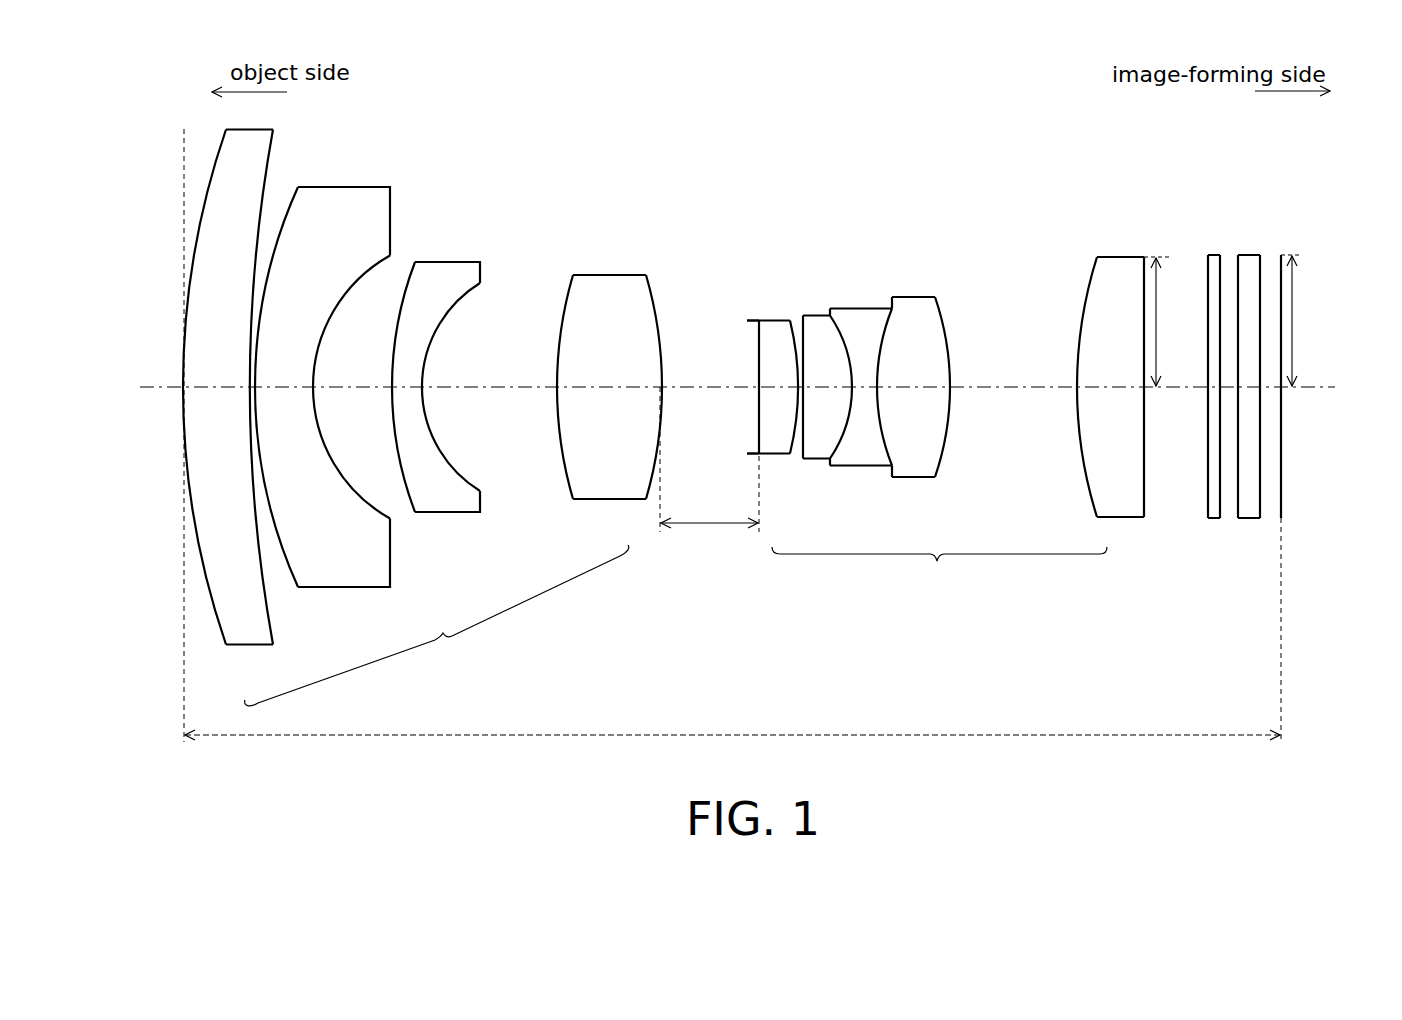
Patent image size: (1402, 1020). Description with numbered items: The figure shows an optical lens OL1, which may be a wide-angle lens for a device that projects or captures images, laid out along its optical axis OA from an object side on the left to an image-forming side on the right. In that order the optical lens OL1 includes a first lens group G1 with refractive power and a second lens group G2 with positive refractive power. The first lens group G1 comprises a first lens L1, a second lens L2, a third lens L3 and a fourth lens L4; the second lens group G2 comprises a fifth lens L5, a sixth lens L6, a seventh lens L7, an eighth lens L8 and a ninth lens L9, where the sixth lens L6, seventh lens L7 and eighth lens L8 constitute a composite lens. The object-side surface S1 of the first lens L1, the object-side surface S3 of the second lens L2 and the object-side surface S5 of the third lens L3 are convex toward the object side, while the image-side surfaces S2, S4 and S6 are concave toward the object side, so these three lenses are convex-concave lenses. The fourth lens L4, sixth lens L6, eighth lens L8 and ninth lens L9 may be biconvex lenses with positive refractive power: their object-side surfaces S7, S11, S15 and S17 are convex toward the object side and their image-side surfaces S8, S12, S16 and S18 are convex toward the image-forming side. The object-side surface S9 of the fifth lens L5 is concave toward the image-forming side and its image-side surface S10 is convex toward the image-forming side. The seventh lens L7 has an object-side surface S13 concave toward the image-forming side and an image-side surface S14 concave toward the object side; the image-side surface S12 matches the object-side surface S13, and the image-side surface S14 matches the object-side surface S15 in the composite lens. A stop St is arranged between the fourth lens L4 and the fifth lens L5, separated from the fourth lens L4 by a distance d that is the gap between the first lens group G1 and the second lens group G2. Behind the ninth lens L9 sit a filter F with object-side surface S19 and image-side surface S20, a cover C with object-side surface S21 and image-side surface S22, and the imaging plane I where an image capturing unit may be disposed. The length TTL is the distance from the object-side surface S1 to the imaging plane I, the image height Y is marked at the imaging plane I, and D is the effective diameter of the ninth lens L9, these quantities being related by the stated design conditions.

The optical lens OL1 is at (165, 63).
The first lens group G1 is at (437, 625).
The second lens group G2 is at (939, 566).
The first lens L1 is at (228, 407).
The second lens L2 is at (322, 390).
The third lens L3 is at (419, 435).
The fourth lens L4 is at (611, 412).
The fifth lens L5 is at (758, 393).
The sixth lens L6 is at (784, 393).
The seventh lens L7 is at (848, 377).
The eighth lens L8 is at (935, 393).
The ninth lens L9 is at (1123, 377).
The object-side surface of the first lens S1 is at (188, 263).
The image-side surface of the first lens S2 is at (274, 174).
The object-side surface of the second lens S3 is at (293, 199).
The image-side surface of the second lens S4 is at (341, 312).
The object-side surface of the third lens S5 is at (389, 409).
The image-side surface of the third lens S6 is at (464, 301).
The object-side surface of the fourth lens S7 is at (565, 301).
The image-side surface of the fourth lens S8 is at (656, 301).
The object-side surface of the fifth lens S9 is at (755, 376).
The image-side surface of the fifth lens S10 is at (791, 324).
The object-side surface of the sixth lens S11 is at (800, 418).
The image-side surface of the sixth lens S12 is at (834, 334).
The object-side surface of the seventh lens S13 is at (807, 317).
The image-side surface of the seventh lens S14 is at (883, 320).
The object-side surface of the eighth lens S15 is at (886, 339).
The image-side surface of the eighth lens S16 is at (947, 312).
The object-side surface of the ninth lens S17 is at (1091, 271).
The image-side surface of the ninth lens S18 is at (1149, 410).
The object-side surface of the filter S19 is at (1205, 274).
The image-side surface of the filter S20 is at (1223, 274).
The object-side surface of the cover S21 is at (1235, 497).
The image-side surface of the cover S22 is at (1263, 274).
The stop St is at (753, 320).
The filter F is at (1201, 395).
The cover C is at (1223, 395).
The imaging plane I is at (1283, 505).
The optical axis OA is at (1306, 391).
The effective diameter of the ninth lens D is at (1163, 321).
The image height Y is at (1299, 320).
The distance between the fourth lens and the second lens group d is at (709, 468).
The length TTL is at (732, 447).